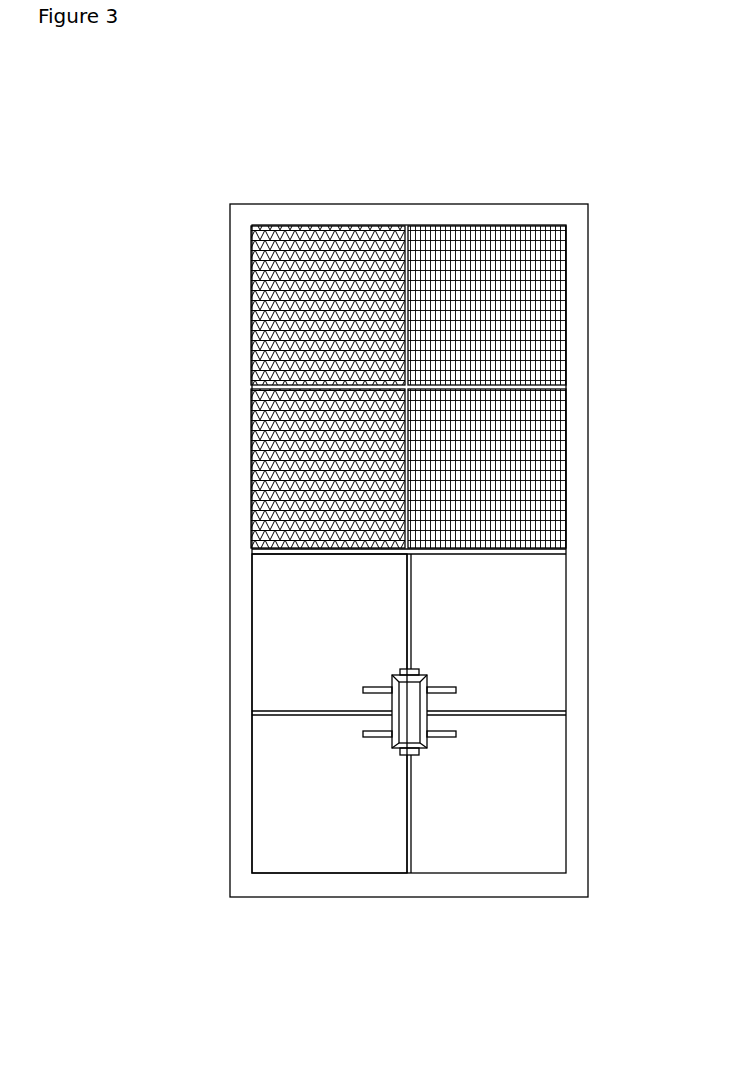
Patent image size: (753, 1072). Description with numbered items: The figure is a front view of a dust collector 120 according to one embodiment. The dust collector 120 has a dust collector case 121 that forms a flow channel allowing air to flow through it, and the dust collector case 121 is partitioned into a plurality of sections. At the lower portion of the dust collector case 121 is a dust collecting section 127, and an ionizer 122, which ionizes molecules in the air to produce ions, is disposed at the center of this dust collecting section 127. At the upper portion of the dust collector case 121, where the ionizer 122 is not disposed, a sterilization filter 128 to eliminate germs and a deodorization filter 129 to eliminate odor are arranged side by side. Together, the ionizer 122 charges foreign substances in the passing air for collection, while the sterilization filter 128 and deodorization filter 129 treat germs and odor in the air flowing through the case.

The dust collector 120 is at (161, 92).
The dust collector case 121 is at (481, 215).
The ionizer 122 is at (407, 713).
The dust collecting section 127 is at (278, 629).
The sterilization filter 128 is at (268, 300).
The deodorization filter 129 is at (548, 300).